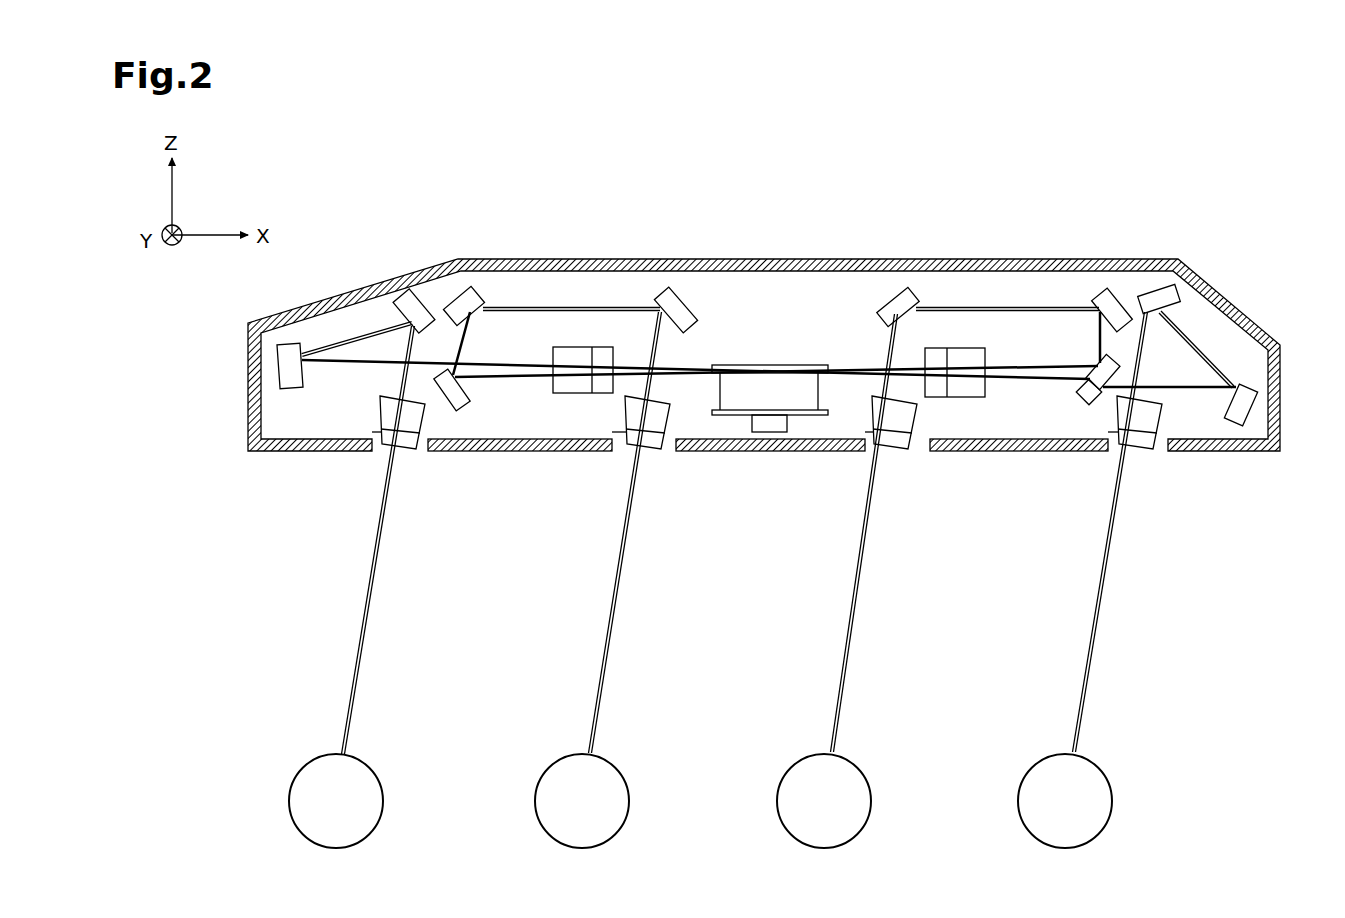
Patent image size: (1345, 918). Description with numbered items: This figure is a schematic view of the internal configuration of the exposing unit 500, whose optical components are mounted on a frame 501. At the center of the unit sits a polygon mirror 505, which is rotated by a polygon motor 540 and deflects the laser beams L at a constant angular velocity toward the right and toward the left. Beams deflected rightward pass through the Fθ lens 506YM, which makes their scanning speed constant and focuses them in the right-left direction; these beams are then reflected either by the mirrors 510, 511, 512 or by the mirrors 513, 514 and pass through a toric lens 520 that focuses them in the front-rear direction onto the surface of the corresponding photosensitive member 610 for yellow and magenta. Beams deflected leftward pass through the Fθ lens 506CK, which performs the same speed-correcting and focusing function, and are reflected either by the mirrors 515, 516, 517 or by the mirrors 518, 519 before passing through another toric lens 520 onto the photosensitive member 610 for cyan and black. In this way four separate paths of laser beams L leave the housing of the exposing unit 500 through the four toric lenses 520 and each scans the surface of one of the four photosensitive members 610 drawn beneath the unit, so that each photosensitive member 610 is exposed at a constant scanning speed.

The exposing unit 500 is at (799, 244).
The frame 501 is at (1250, 308).
The polygon mirror 505 is at (757, 365).
The Fθ lens 506CK is at (582, 345).
The Fθ lens 506YM is at (962, 348).
The mirror 510 is at (1118, 353).
The mirror 511 is at (1122, 300).
The mirror 512 is at (900, 290).
The mirror 513 is at (1241, 386).
The mirror 514 is at (1163, 297).
The mirror 515 is at (440, 372).
The mirror 516 is at (458, 300).
The mirror 517 is at (680, 292).
The mirror 518 is at (289, 345).
The mirror 519 is at (400, 298).
The toric lens 520 is at (362, 449).
The polygon motor 540 is at (727, 390).
The photosensitive member 610 is at (311, 760).
The laser beams L is at (357, 644).